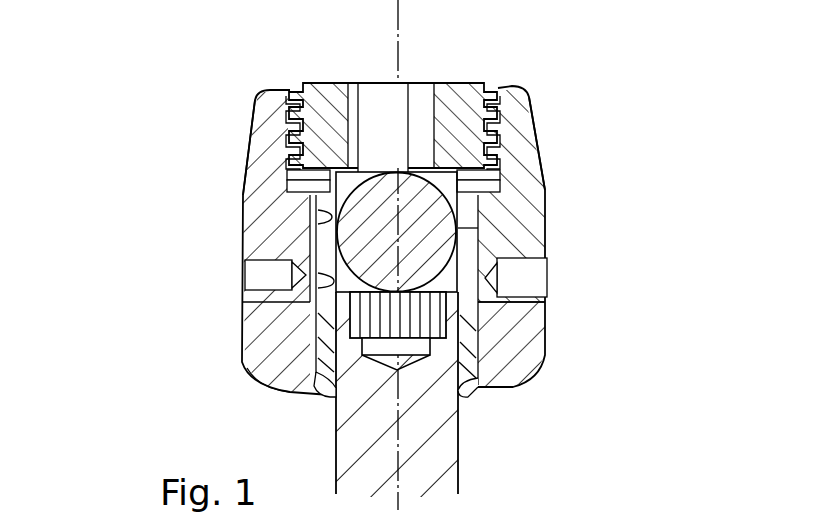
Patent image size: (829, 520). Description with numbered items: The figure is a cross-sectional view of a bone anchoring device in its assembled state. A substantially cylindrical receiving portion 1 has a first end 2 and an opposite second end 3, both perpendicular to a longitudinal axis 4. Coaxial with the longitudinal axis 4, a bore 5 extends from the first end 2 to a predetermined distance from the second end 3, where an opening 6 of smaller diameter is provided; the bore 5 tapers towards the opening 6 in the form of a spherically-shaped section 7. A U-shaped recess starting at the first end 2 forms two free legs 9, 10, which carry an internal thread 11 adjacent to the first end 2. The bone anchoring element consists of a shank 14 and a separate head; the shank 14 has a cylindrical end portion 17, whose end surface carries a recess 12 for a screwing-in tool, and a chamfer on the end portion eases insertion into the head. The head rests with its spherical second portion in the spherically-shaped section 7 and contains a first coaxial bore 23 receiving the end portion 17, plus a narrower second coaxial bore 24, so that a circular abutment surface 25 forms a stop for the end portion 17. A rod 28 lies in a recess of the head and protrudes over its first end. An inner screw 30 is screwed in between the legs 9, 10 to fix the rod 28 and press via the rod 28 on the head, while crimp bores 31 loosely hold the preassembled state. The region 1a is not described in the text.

The receiving portion 1 is at (552, 220).
The housing recess 1a is at (300, 300).
The first end 2 is at (510, 84).
The second end 3 is at (490, 390).
The longitudinal axis 4 is at (400, 32).
The bore 5 is at (310, 231).
The opening 6 is at (333, 394).
The spherically-shaped section 7 is at (482, 378).
The free leg 9 is at (263, 135).
The free leg 10 is at (533, 127).
The internal thread 11 is at (290, 115).
The recess 12 is at (340, 297).
The shank 14 is at (453, 458).
The cylindrical end portion 17 is at (445, 340).
The first coaxial bore 23 is at (312, 366).
The second coaxial bore 24 is at (308, 285).
The circular abutment surface 25 is at (505, 307).
The rod 28 is at (470, 252).
The inner screw 30 is at (312, 80).
The crimp bores 31 is at (547, 268).